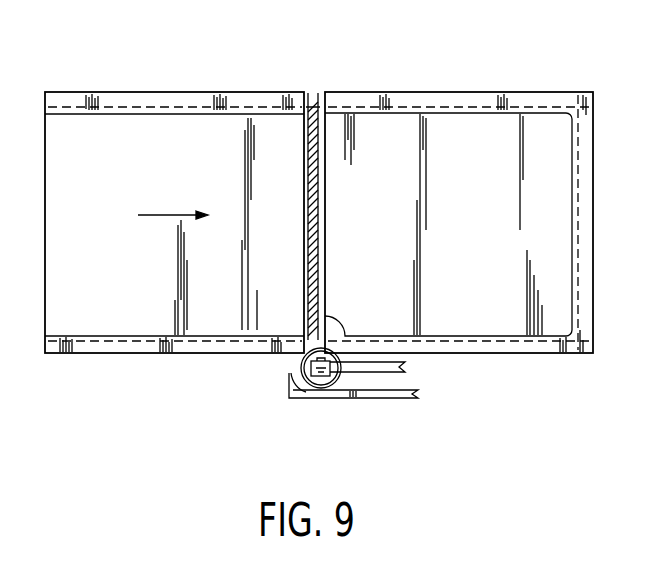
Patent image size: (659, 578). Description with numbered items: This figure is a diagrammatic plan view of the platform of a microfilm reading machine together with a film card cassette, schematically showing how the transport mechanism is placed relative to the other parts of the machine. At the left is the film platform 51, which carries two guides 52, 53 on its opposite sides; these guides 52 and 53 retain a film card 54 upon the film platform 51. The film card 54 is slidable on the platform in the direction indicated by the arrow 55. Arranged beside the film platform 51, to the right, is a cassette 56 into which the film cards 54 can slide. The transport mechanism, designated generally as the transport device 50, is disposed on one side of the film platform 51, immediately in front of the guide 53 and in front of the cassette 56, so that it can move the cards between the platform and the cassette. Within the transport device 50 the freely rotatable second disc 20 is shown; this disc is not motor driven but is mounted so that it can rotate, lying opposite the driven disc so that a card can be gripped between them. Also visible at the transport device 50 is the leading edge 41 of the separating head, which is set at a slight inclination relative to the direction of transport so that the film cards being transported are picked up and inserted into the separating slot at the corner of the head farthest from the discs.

The second disc 20 is at (305, 362).
The leading edge 41 is at (297, 400).
The transport mechanism 50 is at (352, 408).
The film platform 51 is at (83, 137).
The guide 52 is at (232, 92).
The guide 53 is at (104, 350).
The film card 54 is at (313, 93).
The arrow 55 is at (160, 215).
The cassette 56 is at (490, 92).